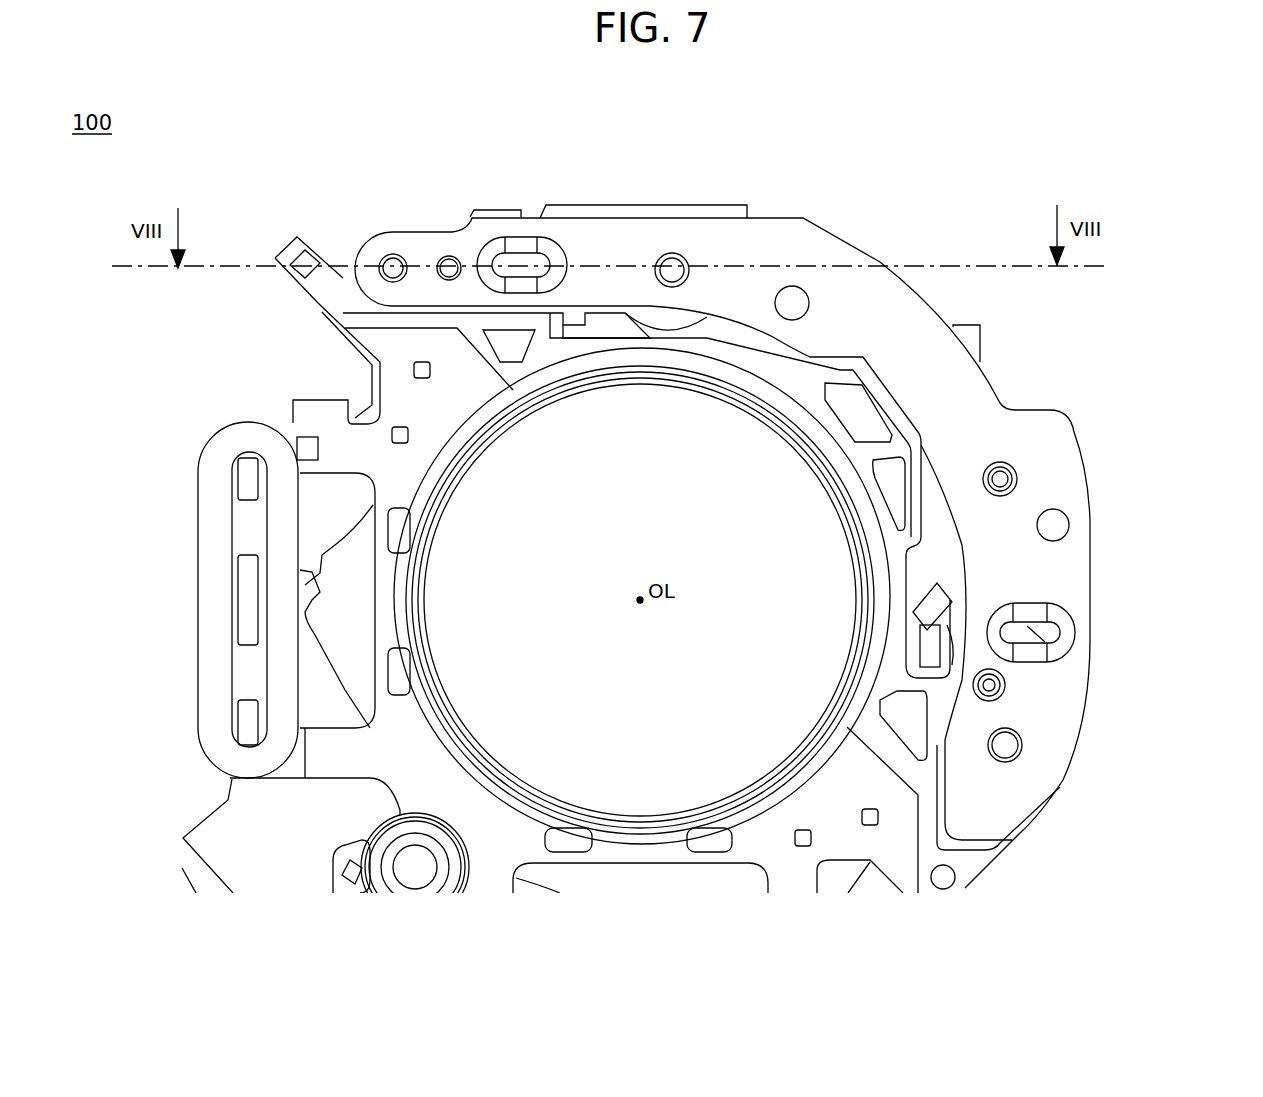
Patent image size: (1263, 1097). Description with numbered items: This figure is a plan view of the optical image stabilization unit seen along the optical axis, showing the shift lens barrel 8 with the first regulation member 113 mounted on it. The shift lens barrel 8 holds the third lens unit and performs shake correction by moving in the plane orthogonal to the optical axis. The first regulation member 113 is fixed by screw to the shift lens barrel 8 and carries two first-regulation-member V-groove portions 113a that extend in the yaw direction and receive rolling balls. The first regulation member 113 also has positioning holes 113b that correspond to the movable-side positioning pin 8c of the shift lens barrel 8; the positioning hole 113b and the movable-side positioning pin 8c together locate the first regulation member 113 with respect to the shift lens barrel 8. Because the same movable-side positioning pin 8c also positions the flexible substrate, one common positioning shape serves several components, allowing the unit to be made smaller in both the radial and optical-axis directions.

The first regulation member 113 is at (892, 310).
The first-regulation-member V-groove portion 113a is at (552, 248).
The positioning hole 113b is at (448, 257).
The shift lens barrel 8 is at (858, 418).
The movable-side positioning pin 8c is at (450, 262).